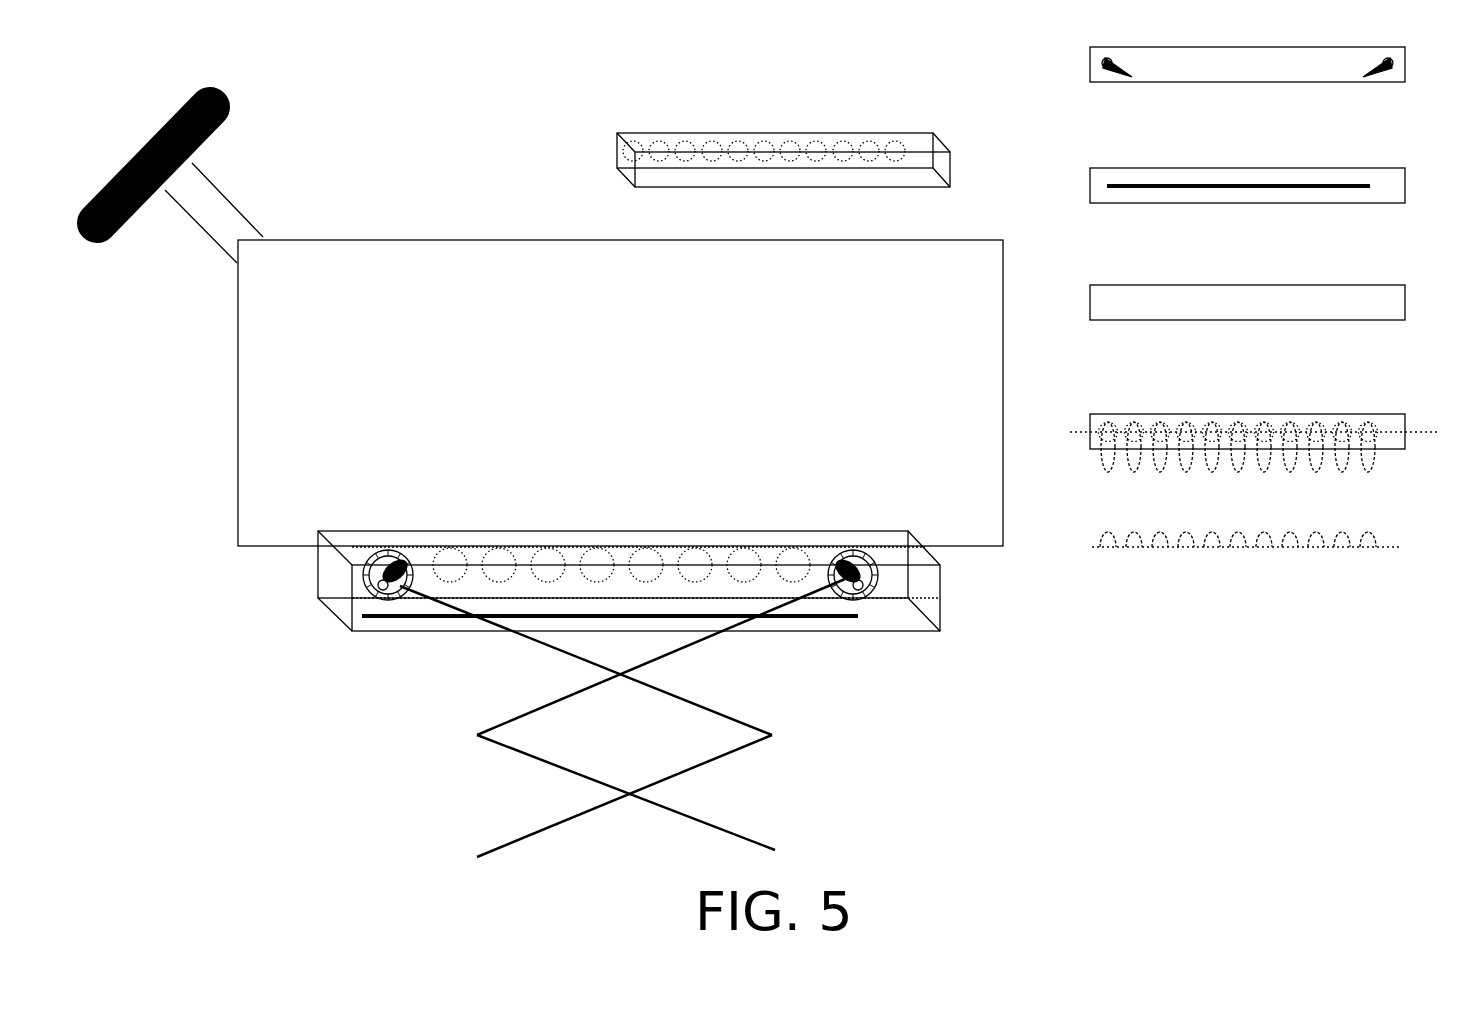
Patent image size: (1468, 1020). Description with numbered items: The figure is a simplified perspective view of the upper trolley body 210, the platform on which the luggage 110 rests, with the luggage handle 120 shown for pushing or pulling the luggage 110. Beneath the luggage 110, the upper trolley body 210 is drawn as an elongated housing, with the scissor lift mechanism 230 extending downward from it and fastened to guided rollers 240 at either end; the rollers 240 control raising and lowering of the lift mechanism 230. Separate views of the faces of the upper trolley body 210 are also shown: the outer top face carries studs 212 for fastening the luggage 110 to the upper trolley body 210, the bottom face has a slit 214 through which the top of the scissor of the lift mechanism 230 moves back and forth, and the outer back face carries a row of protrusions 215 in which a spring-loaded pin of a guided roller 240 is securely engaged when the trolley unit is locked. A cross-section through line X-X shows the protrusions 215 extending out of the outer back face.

The luggage 110 is at (337, 240).
The luggage handle 120 is at (222, 128).
The upper trolley body 210 is at (327, 583).
The studs 212 is at (1140, 63).
The slit 214 is at (826, 620).
The protrusions 215 is at (793, 548).
The scissor lift mechanism 230 is at (553, 702).
The guided rollers 240 is at (393, 560).